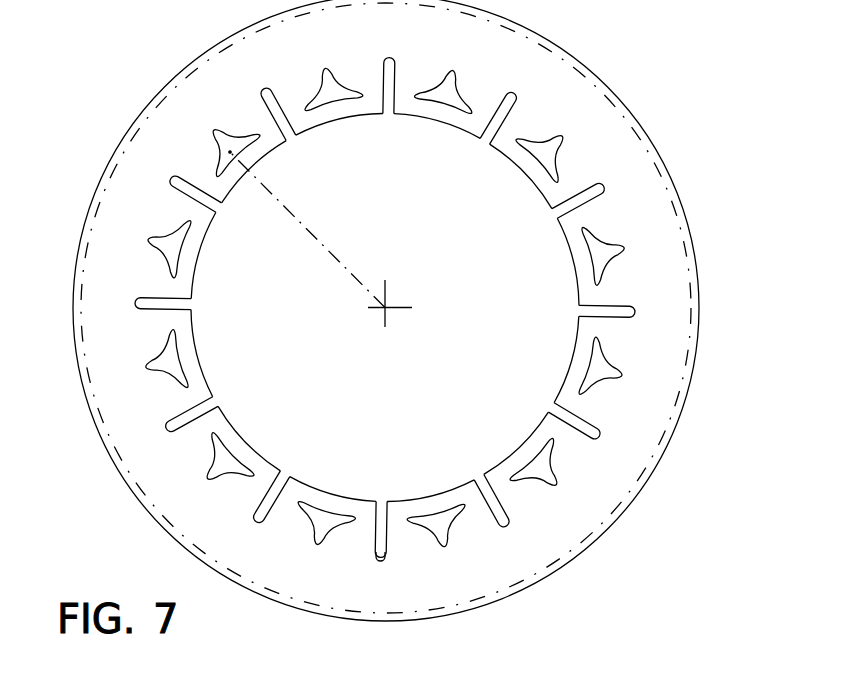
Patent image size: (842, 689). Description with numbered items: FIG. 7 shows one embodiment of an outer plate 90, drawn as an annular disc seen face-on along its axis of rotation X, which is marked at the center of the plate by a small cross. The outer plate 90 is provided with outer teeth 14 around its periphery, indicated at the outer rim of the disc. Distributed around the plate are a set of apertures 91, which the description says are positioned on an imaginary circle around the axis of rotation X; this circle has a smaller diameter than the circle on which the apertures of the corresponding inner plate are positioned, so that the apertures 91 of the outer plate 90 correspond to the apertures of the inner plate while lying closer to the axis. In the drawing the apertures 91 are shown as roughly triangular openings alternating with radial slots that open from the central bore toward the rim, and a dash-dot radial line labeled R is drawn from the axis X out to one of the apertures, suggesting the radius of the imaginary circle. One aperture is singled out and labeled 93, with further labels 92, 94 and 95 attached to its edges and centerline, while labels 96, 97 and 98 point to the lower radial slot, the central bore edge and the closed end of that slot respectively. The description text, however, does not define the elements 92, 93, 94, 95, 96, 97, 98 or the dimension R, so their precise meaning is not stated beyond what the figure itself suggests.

The outer teeth 14 is at (550, 47).
The outer plate 90 is at (650, 107).
The apertures 91 is at (178, 377).
The aperture side wall 92 is at (240, 135).
The triangular aperture 93 is at (212, 152).
The aperture outer vertex 94 is at (215, 132).
The aperture centerline 95 is at (241, 180).
The radial slot 96 is at (382, 510).
The central bore 97 is at (337, 493).
The slot closed end 98 is at (381, 558).
The radius R is at (356, 277).
The axis of rotation X is at (385, 308).